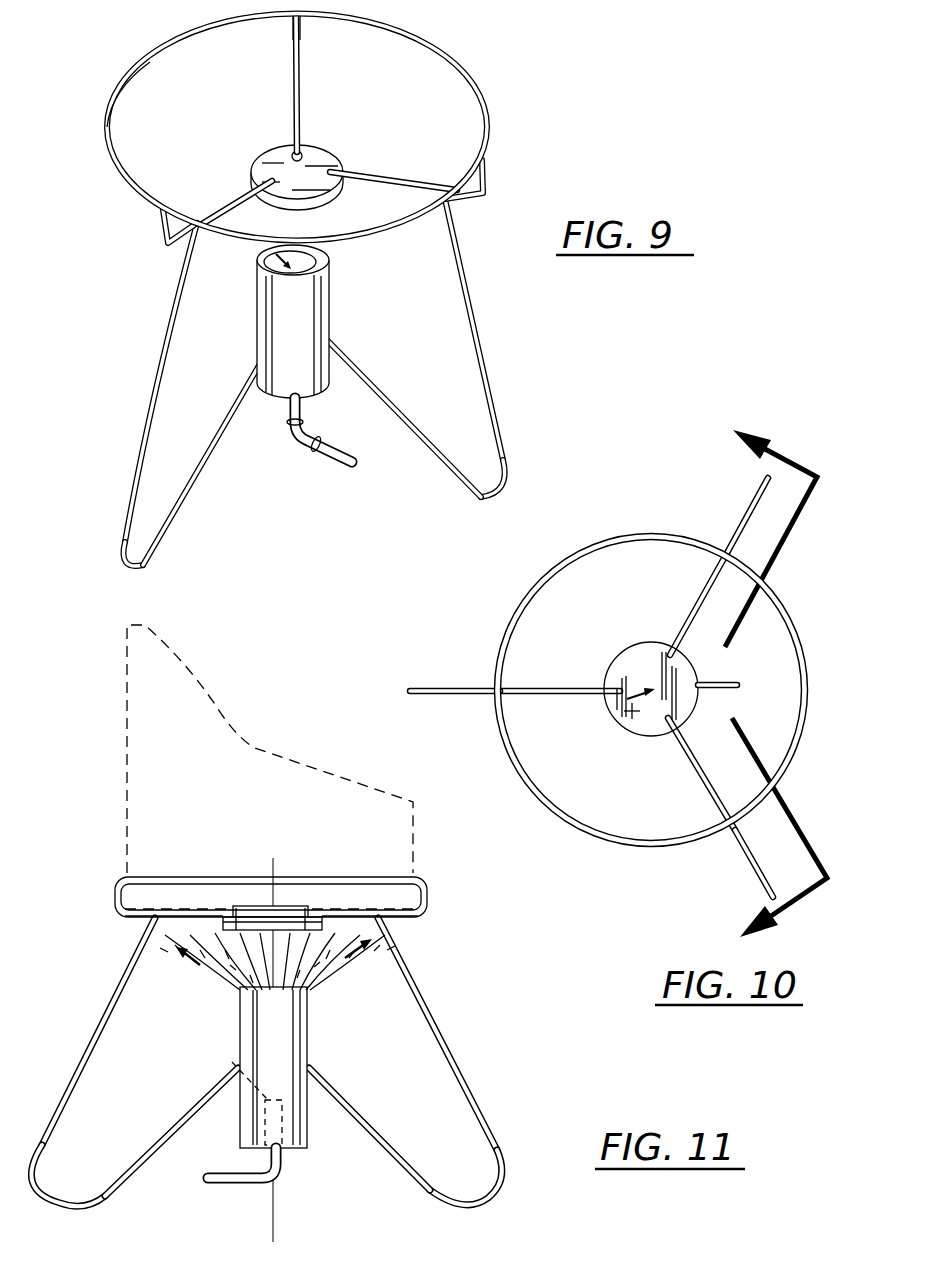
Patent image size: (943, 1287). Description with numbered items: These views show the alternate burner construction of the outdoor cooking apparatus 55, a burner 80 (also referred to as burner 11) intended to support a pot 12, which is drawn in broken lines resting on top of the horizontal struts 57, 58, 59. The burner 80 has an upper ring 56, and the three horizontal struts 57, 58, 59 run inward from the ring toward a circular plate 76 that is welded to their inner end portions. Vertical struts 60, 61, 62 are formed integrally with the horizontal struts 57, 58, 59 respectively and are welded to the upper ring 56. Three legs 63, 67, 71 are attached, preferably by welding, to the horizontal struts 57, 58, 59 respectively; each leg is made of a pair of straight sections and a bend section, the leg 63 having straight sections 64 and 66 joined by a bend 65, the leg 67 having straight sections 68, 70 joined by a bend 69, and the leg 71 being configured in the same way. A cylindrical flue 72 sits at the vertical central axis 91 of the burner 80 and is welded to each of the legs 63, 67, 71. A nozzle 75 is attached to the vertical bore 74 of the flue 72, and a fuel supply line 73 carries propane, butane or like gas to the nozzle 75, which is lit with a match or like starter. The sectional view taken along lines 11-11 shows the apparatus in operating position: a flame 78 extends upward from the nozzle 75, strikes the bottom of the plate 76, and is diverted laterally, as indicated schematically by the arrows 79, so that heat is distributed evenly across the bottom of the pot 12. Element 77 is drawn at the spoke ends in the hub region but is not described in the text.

In FIG. 10, the burner 11 is at (776, 677).
In FIG. 11, the pot 12 is at (125, 725).
In FIG. 9, the outdoor cooking apparatus 55 is at (526, 80).
In FIG. 11, the outdoor cooking apparatus 55 is at (257, 687).
In FIG. 9, the upper ring 56 is at (438, 45).
In FIG. 10, the upper ring 56 is at (651, 534).
In FIG. 11, the upper ring 56 is at (114, 880).
In FIG. 9, the horizontal strut 57 is at (235, 200).
In FIG. 10, the horizontal strut 57 is at (702, 784).
In FIG. 11, the horizontal strut 57 is at (140, 925).
In FIG. 9, the horizontal strut 58 is at (433, 180).
In FIG. 10, the horizontal strut 58 is at (705, 583).
In FIG. 11, the horizontal strut 58 is at (413, 921).
In FIG. 9, the horizontal strut 59 is at (305, 100).
In FIG. 10, the horizontal strut 59 is at (558, 668).
In FIG. 9, the vertical strut 60 is at (162, 230).
In FIG. 9, the vertical strut 61 is at (493, 176).
In FIG. 9, the vertical strut 62 is at (283, 28).
In FIG. 9, the leg 63 is at (184, 413).
In FIG. 10, the leg 63 is at (756, 881).
In FIG. 11, the leg 63 is at (134, 1077).
In FIG. 9, the straight section 64 is at (170, 318).
In FIG. 11, the straight section 64 is at (140, 952).
In FIG. 9, the bend 65 is at (138, 577).
In FIG. 11, the bend 65 is at (85, 1212).
In FIG. 9, the straight section 66 is at (217, 466).
In FIG. 11, the straight section 66 is at (150, 1173).
In FIG. 9, the leg 67 is at (444, 376).
In FIG. 10, the leg 67 is at (757, 490).
In FIG. 11, the leg 67 is at (431, 1063).
In FIG. 9, the straight section 68 is at (454, 264).
In FIG. 11, the straight section 68 is at (410, 963).
In FIG. 9, the bend 69 is at (478, 506).
In FIG. 11, the bend 69 is at (498, 1200).
In FIG. 9, the straight section 70 is at (420, 432).
In FIG. 11, the straight section 70 is at (398, 1193).
In FIG. 10, the leg 71 is at (458, 686).
In FIG. 9, the cylindrical flue 72 is at (256, 312).
In FIG. 11, the cylindrical flue 72 is at (308, 1020).
In FIG. 9, the fuel supply line 73 is at (331, 465).
In FIG. 11, the fuel supply line 73 is at (230, 1184).
In FIG. 9, the vertical bore 74 is at (262, 250).
In FIG. 11, the nozzle 75 is at (232, 1062).
In FIG. 9, the circular plate 76 is at (270, 158).
In FIG. 10, the circular plate 76 is at (625, 720).
In FIG. 11, the circular plate 76 is at (255, 912).
In FIG. 10, the spoke end 77 is at (668, 650).
In FIG. 11, the spoke end 77 is at (310, 908).
In FIG. 11, the flame 78 is at (180, 968).
In FIG. 11, the arrows 79 is at (228, 975).
In FIG. 9, the burner 80 is at (108, 90).
In FIG. 10, the vertical central axis 91 is at (627, 699).
In FIG. 11, the vertical central axis 91 is at (273, 858).